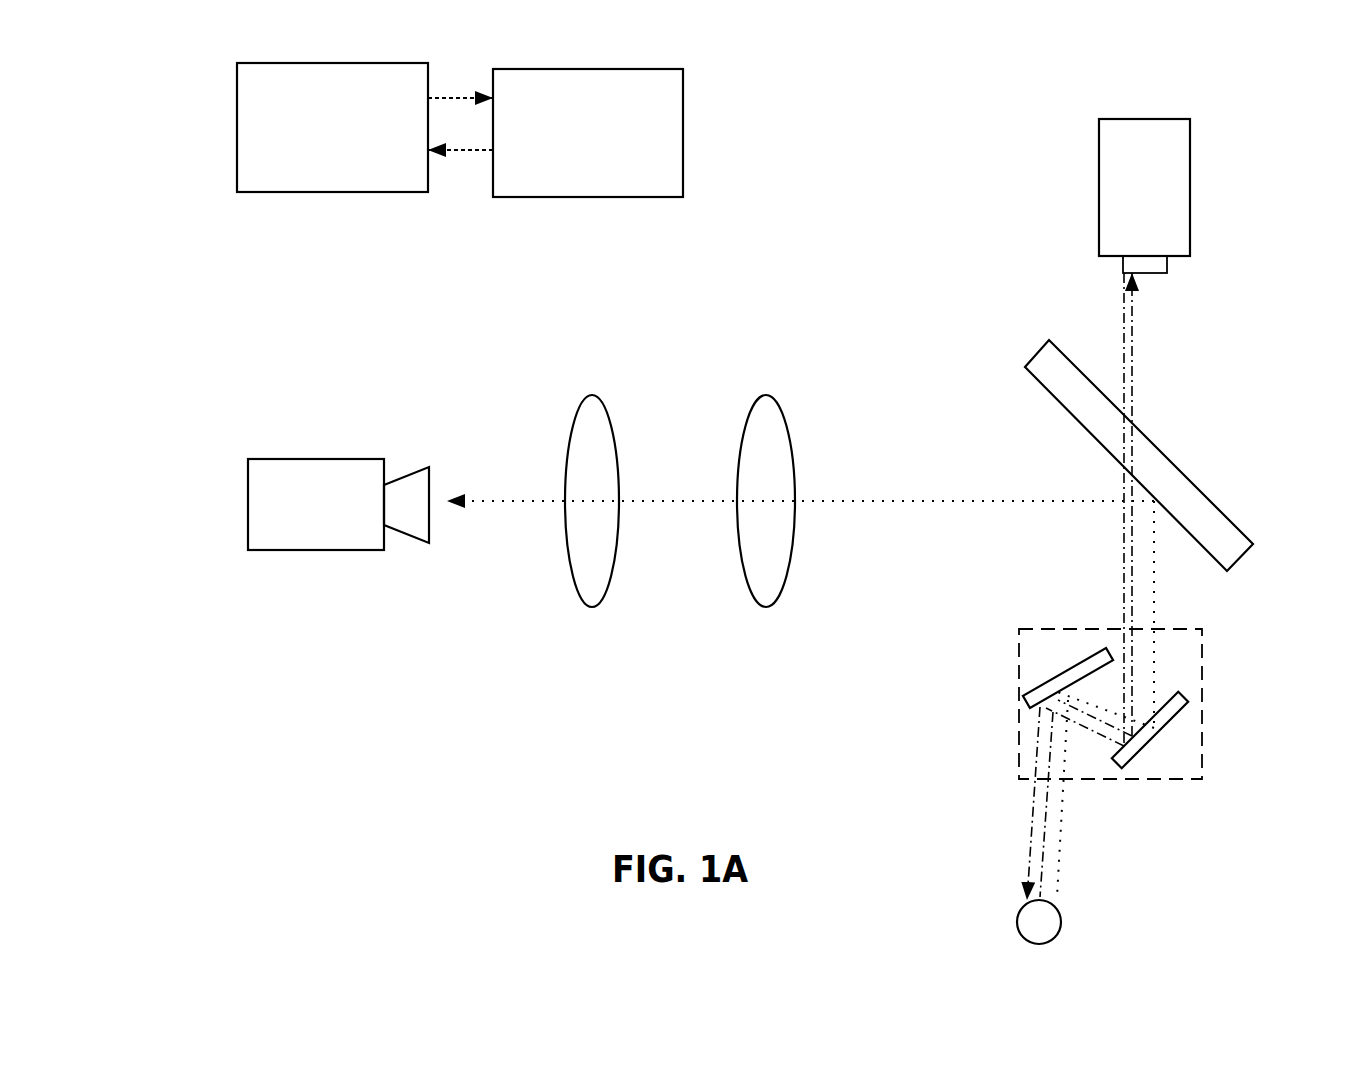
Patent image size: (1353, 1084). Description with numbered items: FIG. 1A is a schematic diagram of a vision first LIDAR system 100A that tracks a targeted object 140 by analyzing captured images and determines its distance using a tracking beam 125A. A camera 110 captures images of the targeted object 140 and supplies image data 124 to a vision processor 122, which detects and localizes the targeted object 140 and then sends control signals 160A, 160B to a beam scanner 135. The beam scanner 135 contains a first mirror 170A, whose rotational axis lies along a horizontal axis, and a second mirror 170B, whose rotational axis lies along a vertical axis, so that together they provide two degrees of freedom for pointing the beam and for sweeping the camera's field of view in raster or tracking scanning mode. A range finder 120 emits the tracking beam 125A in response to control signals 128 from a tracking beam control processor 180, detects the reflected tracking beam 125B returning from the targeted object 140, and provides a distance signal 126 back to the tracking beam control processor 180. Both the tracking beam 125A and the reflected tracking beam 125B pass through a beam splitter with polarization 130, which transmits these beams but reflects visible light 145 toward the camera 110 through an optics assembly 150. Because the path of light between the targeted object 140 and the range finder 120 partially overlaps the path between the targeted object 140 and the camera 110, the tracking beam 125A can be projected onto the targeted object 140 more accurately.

The vision first LIDAR system 100A is at (119, 58).
The camera 110 is at (335, 459).
The range finder 120 is at (1190, 158).
The vision processor 122 is at (332, 127).
The image data 124 is at (340, 192).
The tracking beam 125A is at (1122, 303).
The reflected tracking beam 125B is at (1133, 342).
The distance signal 126 is at (607, 197).
The control signals 128 is at (683, 127).
The beam splitter with polarization 130 is at (1240, 530).
The beam scanner 135 is at (1202, 641).
The targeted object 140 is at (1061, 922).
The light 145 is at (922, 502).
The optics assembly 150 is at (600, 400).
The control signal 160A is at (237, 135).
The control signal 160B is at (237, 172).
The first mirror 170A is at (1143, 750).
The second mirror 170B is at (1085, 655).
The tracking beam control processor 180 is at (588, 133).